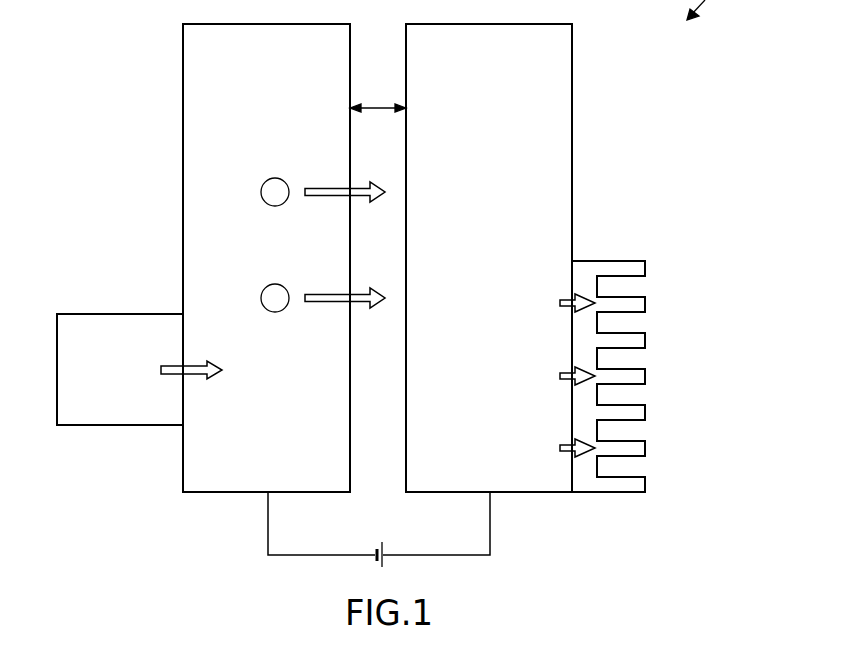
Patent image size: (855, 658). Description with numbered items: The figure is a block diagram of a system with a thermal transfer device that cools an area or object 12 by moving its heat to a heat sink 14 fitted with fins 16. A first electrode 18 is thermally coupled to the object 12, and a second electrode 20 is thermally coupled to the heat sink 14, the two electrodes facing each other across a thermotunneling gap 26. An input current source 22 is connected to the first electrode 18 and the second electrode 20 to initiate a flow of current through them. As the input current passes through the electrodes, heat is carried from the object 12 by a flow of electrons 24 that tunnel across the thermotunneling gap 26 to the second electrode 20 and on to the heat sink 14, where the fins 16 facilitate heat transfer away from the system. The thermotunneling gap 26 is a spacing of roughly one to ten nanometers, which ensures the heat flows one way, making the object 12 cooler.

The object 12 is at (120, 314).
The heat sink 14 is at (612, 261).
The fins 16 is at (652, 338).
The first electrode 18 is at (183, 97).
The second electrode 20 is at (572, 96).
The input current source 22 is at (270, 566).
The electrons 24 is at (265, 183).
The thermotunneling gap 26 is at (377, 108).